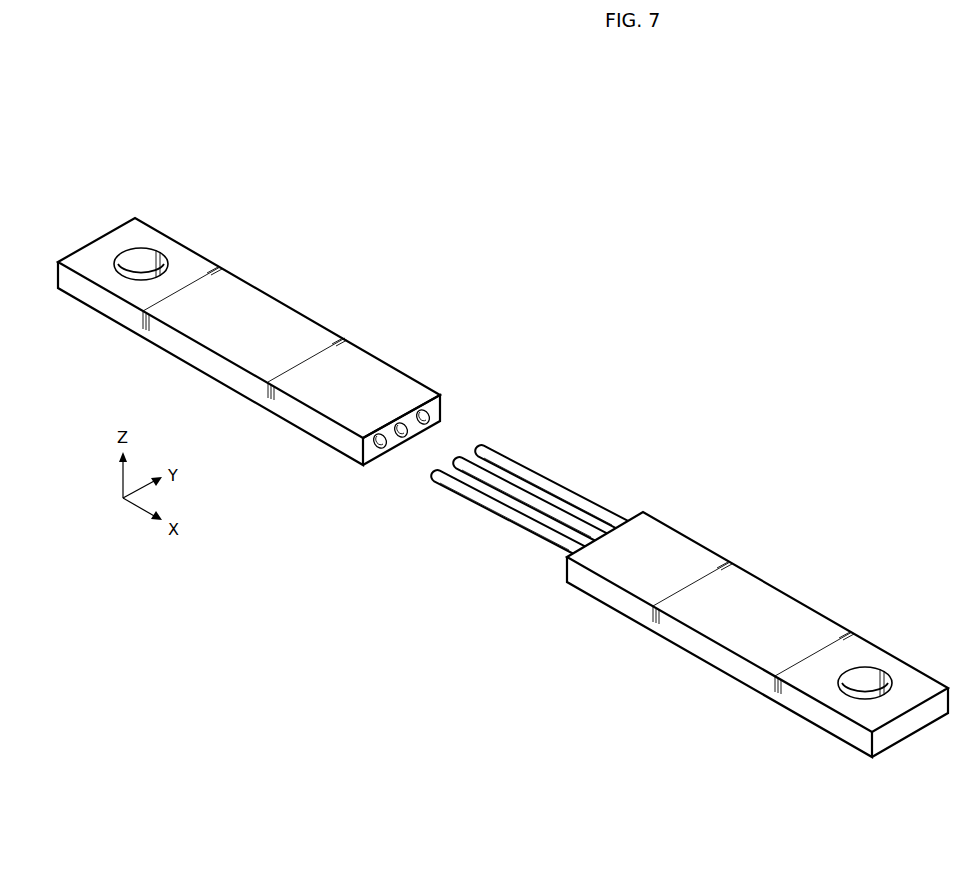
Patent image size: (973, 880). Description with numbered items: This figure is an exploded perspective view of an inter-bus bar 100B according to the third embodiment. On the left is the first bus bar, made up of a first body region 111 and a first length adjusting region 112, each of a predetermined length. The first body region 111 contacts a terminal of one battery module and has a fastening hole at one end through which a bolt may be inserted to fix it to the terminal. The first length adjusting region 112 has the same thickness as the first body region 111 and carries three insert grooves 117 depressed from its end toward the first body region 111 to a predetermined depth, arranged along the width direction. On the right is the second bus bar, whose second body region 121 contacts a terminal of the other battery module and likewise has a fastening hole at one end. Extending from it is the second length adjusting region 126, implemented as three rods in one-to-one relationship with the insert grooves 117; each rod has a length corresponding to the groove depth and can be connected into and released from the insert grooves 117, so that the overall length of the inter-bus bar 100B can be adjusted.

The inter-bus bar 100B is at (861, 259).
The first body region 111 is at (249, 328).
The first length adjusting region 112 is at (375, 370).
The insert groove 117 is at (428, 427).
The second length adjusting region 126 is at (547, 480).
The second body region 121 is at (757, 634).